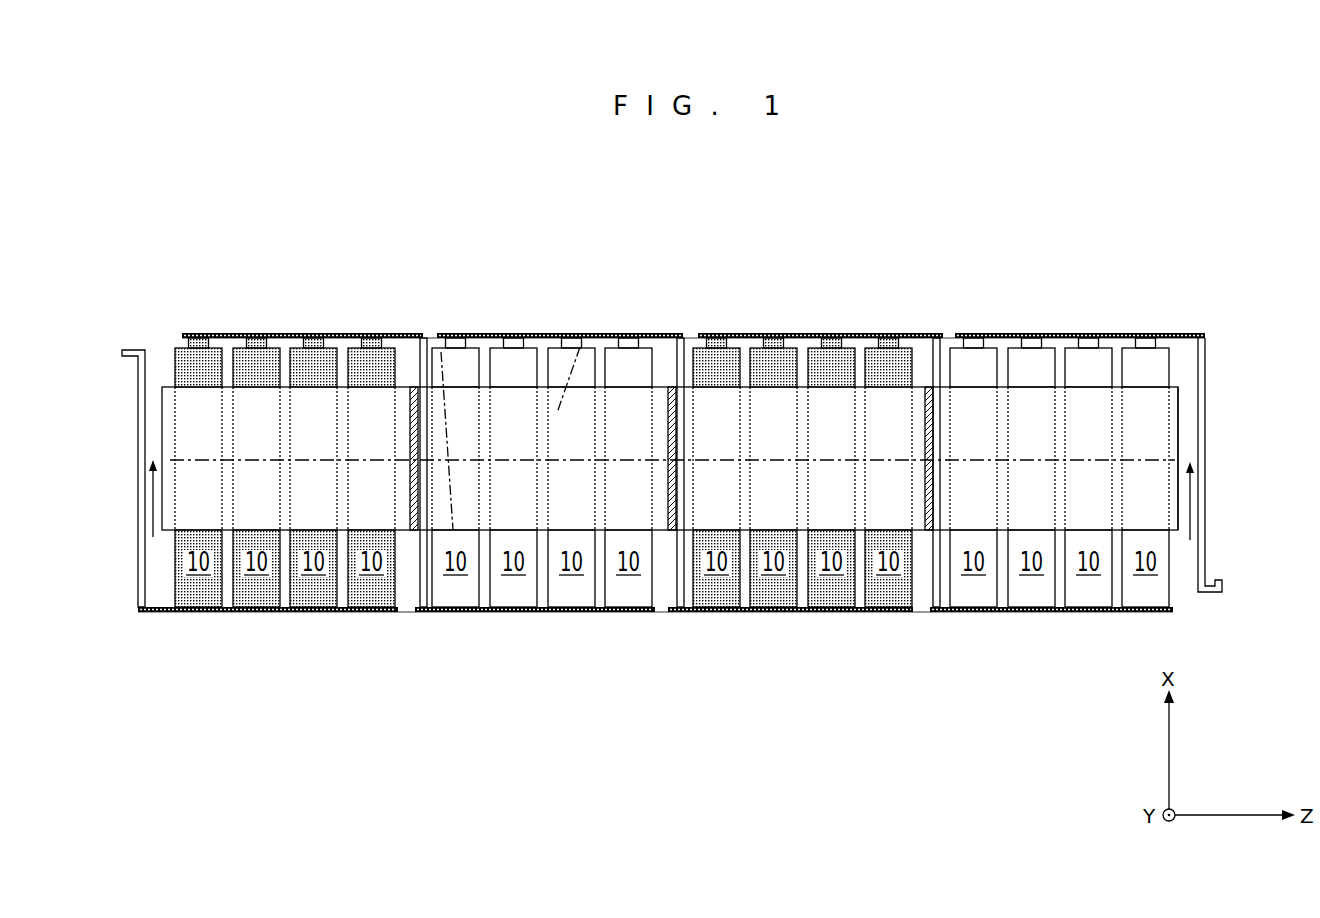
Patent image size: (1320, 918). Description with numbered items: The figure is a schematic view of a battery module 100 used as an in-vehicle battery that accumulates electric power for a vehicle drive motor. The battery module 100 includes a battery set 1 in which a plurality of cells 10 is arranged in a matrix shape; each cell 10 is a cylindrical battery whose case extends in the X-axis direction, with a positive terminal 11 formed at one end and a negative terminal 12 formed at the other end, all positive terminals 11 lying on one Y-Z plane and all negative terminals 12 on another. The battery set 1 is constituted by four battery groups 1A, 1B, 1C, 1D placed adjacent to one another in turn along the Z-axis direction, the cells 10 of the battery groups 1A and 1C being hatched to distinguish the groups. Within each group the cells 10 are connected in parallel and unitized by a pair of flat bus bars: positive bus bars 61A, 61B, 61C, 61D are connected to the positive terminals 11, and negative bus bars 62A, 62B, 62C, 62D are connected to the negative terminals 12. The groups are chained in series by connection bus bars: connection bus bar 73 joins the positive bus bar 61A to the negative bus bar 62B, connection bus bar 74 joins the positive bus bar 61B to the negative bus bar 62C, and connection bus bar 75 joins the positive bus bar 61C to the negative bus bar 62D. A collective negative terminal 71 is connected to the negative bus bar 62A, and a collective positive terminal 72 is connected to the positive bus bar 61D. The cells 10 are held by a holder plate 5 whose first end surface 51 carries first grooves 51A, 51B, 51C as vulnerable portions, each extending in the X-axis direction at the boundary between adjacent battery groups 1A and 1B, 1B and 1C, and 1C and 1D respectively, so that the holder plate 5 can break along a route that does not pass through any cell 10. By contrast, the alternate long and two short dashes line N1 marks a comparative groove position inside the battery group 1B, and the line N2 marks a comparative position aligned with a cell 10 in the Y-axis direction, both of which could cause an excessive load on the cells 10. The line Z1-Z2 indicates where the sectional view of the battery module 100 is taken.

The battery module 100 is at (762, 266).
The battery set 1 is at (671, 502).
The battery group 1A is at (296, 646).
The battery group 1B is at (554, 646).
The battery group 1C is at (811, 646).
The battery group 1D is at (1063, 646).
The cell 10 is at (672, 472).
The positive terminal 11 is at (186, 342).
The negative terminal 12 is at (186, 612).
The holder plate 5 is at (1197, 436).
The first end surface 51 is at (1135, 428).
The first groove 51A is at (408, 445).
The first groove 51B is at (668, 452).
The first groove 51C is at (925, 447).
The positive bus bar 61A is at (283, 333).
The positive bus bar 61B is at (540, 333).
The positive bus bar 61C is at (798, 333).
The positive bus bar 61D is at (1058, 333).
The negative bus bar 62A is at (250, 612).
The negative bus bar 62B is at (500, 612).
The negative bus bar 62C is at (762, 612).
The negative bus bar 62D is at (995, 612).
The collective negative terminal 71 is at (138, 553).
The collective positive terminal 72 is at (1205, 586).
The connection bus bar 73 is at (416, 585).
The connection bus bar 74 is at (676, 580).
The connection bus bar 75 is at (935, 580).
The alternate long and two short dashes line N1 is at (583, 330).
The alternate long and two short dashes line N2 is at (437, 337).
The line Z1-Z2 Z1 is at (158, 511).
The line Z1- Z2 is at (1192, 512).